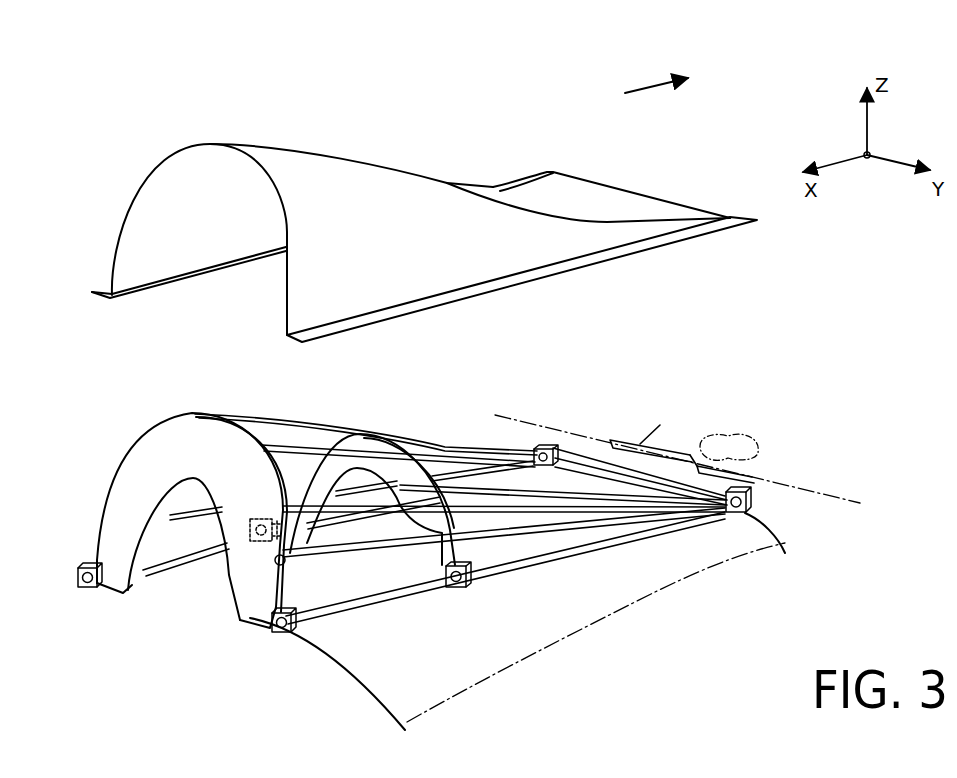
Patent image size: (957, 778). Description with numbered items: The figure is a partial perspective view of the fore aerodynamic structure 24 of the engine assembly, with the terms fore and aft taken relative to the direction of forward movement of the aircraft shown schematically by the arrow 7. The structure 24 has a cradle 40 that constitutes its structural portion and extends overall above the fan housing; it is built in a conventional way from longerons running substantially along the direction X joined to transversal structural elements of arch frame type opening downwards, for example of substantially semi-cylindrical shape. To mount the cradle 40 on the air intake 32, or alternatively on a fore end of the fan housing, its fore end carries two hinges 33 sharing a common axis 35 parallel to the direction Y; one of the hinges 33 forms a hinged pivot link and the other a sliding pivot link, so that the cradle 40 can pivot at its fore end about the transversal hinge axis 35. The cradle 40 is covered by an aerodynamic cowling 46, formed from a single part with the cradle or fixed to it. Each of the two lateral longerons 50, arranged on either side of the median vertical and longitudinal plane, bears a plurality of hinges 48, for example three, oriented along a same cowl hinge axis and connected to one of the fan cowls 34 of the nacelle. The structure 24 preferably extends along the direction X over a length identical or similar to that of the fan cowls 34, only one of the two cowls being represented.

The arrow 7 is at (653, 88).
The fore aerodynamic structure 24 is at (408, 179).
The aerodynamic cowling 46 is at (130, 182).
The cradle 40 is at (448, 546).
The hinges 48 is at (258, 520).
The longerons 50 is at (197, 557).
The hinge axis 35 is at (510, 415).
The hinges 33 is at (667, 446).
The air intake 32 is at (743, 438).
The fan cowls 34 is at (548, 632).